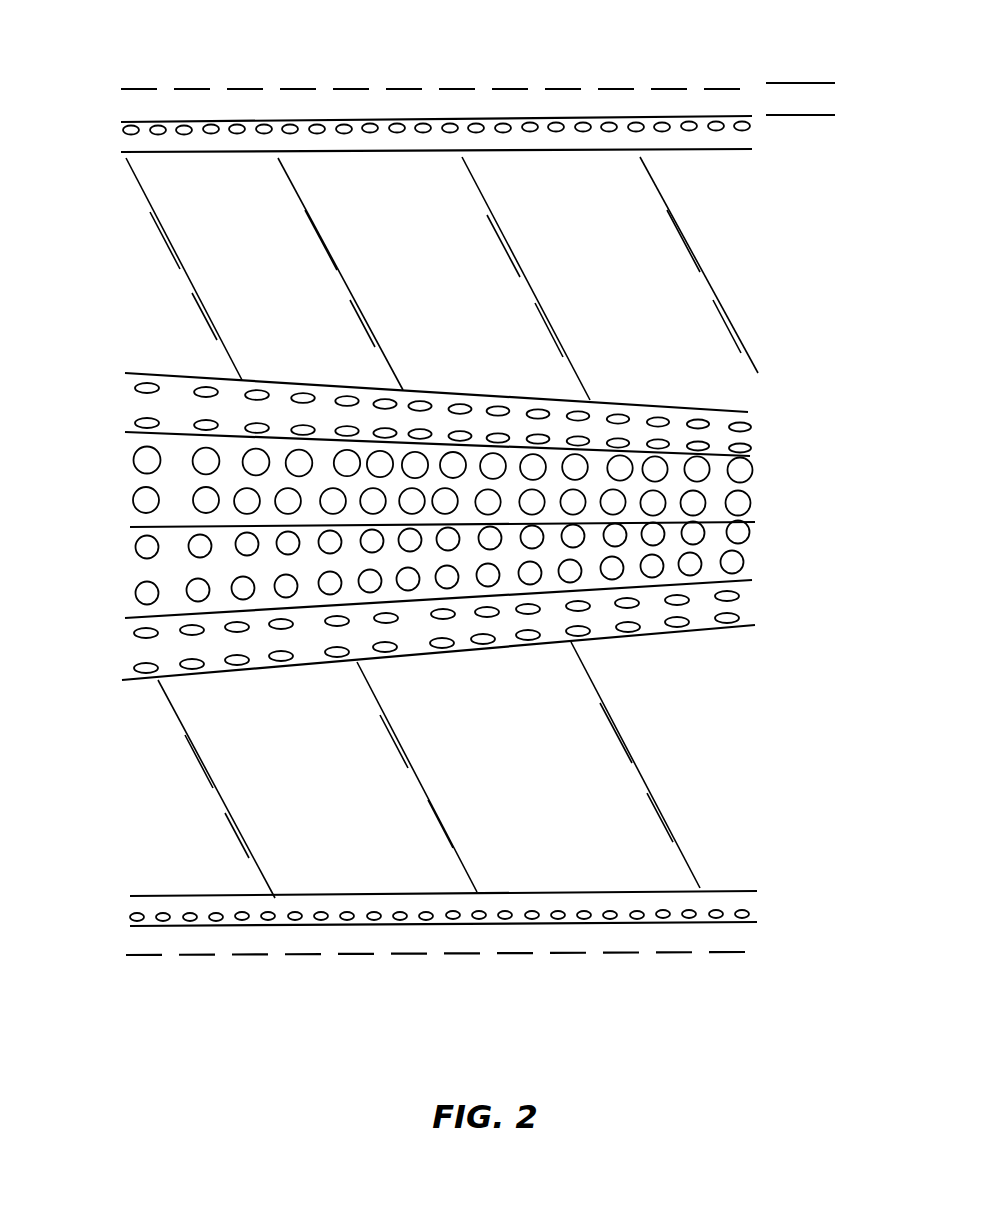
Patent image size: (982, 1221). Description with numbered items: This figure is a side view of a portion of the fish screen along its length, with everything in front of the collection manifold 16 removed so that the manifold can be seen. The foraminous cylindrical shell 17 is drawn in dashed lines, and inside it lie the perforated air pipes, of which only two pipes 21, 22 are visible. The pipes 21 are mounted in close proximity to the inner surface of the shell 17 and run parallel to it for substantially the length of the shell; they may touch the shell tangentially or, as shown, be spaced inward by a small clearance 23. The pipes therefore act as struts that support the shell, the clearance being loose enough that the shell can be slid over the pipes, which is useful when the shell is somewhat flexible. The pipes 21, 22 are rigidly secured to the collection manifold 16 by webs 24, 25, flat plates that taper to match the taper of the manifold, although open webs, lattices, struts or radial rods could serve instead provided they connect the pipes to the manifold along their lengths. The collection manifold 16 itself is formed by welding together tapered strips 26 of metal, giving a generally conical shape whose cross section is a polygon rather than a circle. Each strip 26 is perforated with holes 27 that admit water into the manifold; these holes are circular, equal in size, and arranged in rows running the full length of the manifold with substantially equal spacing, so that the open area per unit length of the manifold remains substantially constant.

The collection manifold 16 is at (439, 526).
The foraminous cylindrical shell 17 is at (393, 86).
The perforated air pipe 21 is at (455, 118).
The perforated air pipe 22 is at (497, 926).
The clearance 23 is at (812, 150).
The web 24 is at (454, 297).
The web 25 is at (543, 776).
The tapered strip 26 is at (113, 523).
The hole 27 is at (133, 457).